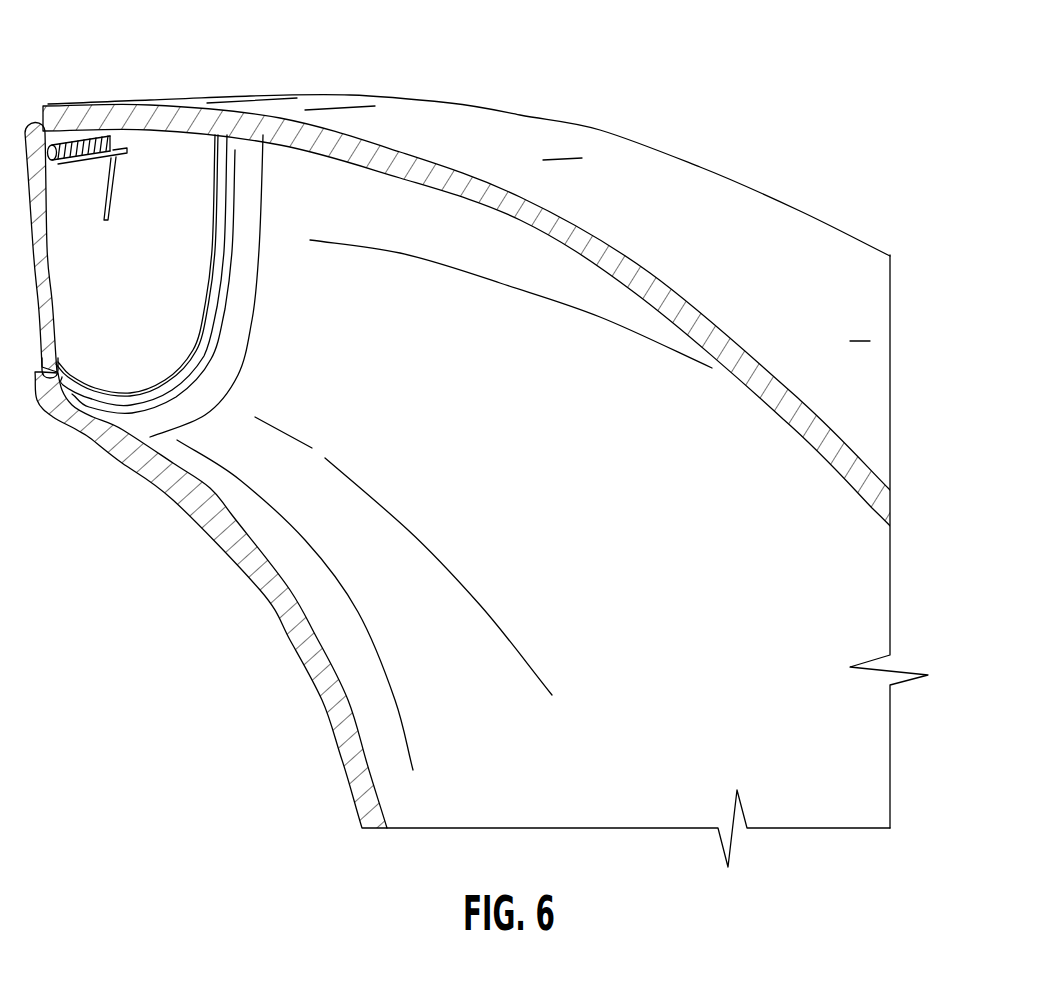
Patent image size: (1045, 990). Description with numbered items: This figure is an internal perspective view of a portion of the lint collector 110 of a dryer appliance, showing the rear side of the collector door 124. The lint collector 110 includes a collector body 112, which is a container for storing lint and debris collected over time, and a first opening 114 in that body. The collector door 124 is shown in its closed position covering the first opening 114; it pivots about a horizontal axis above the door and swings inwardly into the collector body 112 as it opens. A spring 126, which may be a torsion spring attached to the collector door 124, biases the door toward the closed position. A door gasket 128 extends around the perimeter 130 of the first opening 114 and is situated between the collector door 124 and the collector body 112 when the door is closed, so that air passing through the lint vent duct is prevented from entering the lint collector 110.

The lint collector 110 is at (733, 110).
The collector body 112 is at (852, 585).
The first opening 114 is at (125, 364).
The collector door 124 is at (88, 302).
The spring 126 is at (55, 150).
The door gasket 128 is at (223, 155).
The perimeter 130 is at (200, 302).